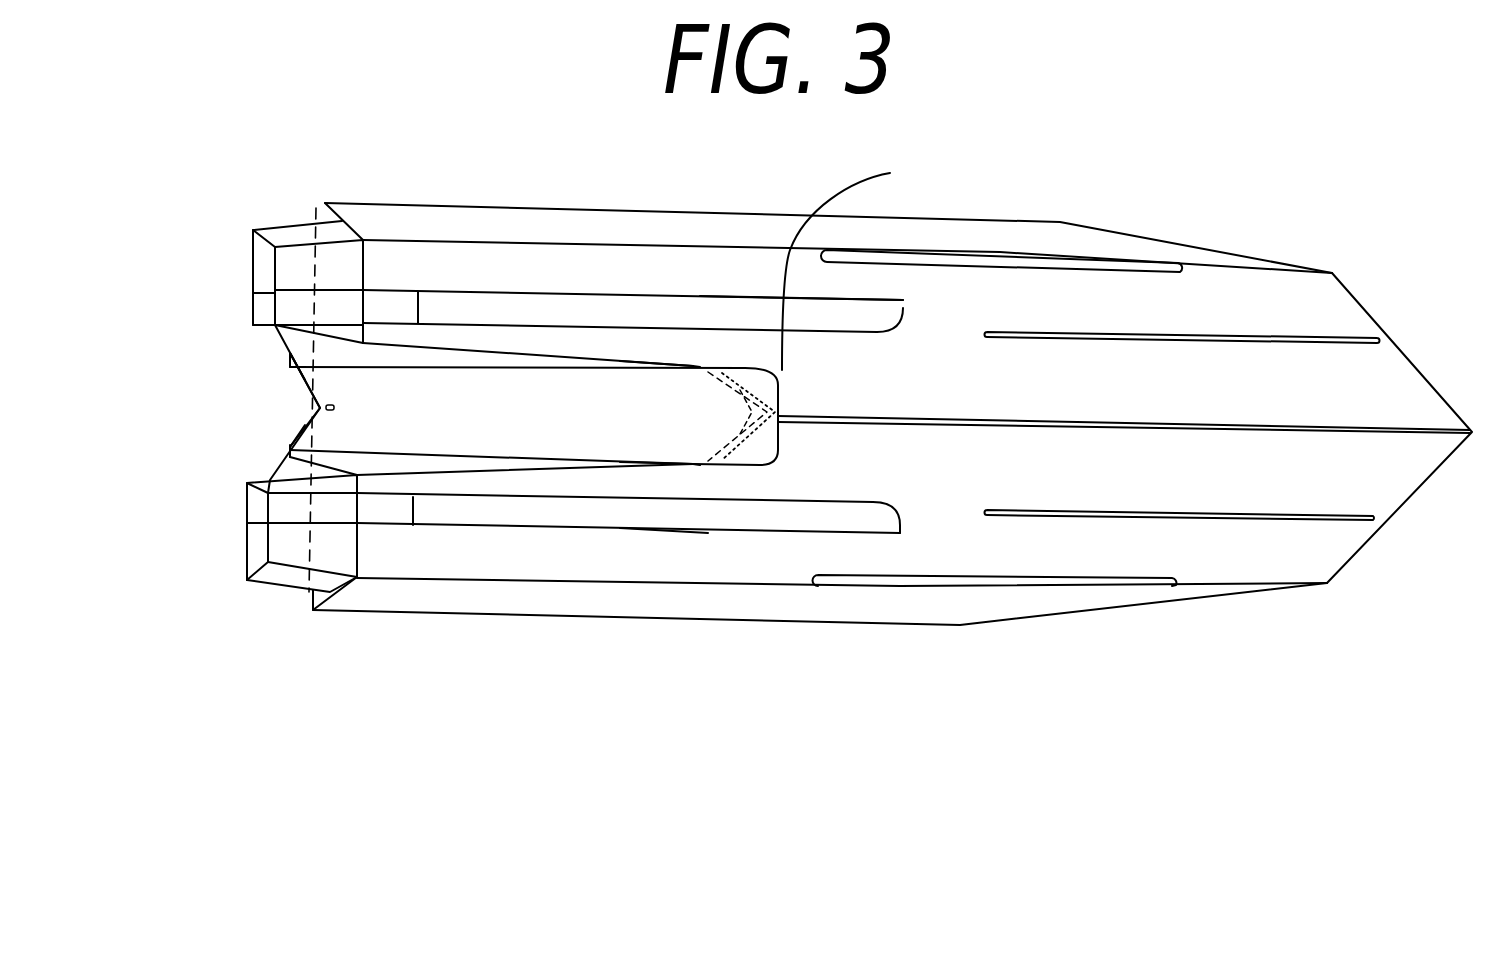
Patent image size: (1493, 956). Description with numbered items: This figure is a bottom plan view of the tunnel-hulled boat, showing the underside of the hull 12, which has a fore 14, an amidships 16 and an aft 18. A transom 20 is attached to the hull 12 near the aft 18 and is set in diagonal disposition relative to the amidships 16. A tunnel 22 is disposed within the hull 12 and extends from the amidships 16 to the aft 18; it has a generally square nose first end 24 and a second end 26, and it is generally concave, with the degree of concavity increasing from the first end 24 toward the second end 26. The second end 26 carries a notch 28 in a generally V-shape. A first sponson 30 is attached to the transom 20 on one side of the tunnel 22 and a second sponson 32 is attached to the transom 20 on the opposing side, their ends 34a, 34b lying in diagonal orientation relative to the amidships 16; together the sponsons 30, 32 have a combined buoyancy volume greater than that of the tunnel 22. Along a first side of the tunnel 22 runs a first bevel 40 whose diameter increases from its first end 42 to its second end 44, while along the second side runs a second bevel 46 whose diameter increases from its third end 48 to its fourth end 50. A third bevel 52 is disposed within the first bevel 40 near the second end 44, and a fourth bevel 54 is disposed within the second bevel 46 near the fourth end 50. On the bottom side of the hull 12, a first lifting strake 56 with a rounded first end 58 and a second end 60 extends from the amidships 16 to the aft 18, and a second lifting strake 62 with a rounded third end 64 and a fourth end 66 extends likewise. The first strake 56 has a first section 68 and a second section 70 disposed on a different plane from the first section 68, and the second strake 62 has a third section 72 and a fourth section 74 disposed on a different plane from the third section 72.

The hull 12 is at (1162, 477).
The fore 14 is at (1418, 488).
The amidships 16 is at (770, 568).
The aft 18 is at (370, 567).
The transom 20 is at (325, 210).
The tunnel 22 is at (526, 413).
The first end 24 is at (982, 267).
The second end 26 is at (307, 386).
The notch 28 is at (303, 411).
The first sponson 30 is at (287, 255).
The second sponson 32 is at (278, 565).
The end of first sponson 34a is at (262, 308).
The end of second sponson 34b is at (273, 517).
The first bevel 40 is at (498, 355).
The first end 42 is at (655, 362).
The second end 44 is at (300, 376).
The second bevel 46 is at (517, 465).
The third end 48 is at (665, 467).
The fourth end 50 is at (288, 452).
The third bevel 52 is at (280, 345).
The fourth bevel 54 is at (313, 548).
The first lifting strake 56 is at (542, 313).
The rounded first end 58 is at (903, 308).
The second end 60 is at (252, 283).
The second lifting strake 62 is at (522, 517).
The rounded third end 64 is at (913, 523).
The fourth end 66 is at (252, 542).
The first section 68 is at (728, 310).
The second section 70 is at (393, 310).
The third section 72 is at (708, 533).
The fourth section 74 is at (397, 513).